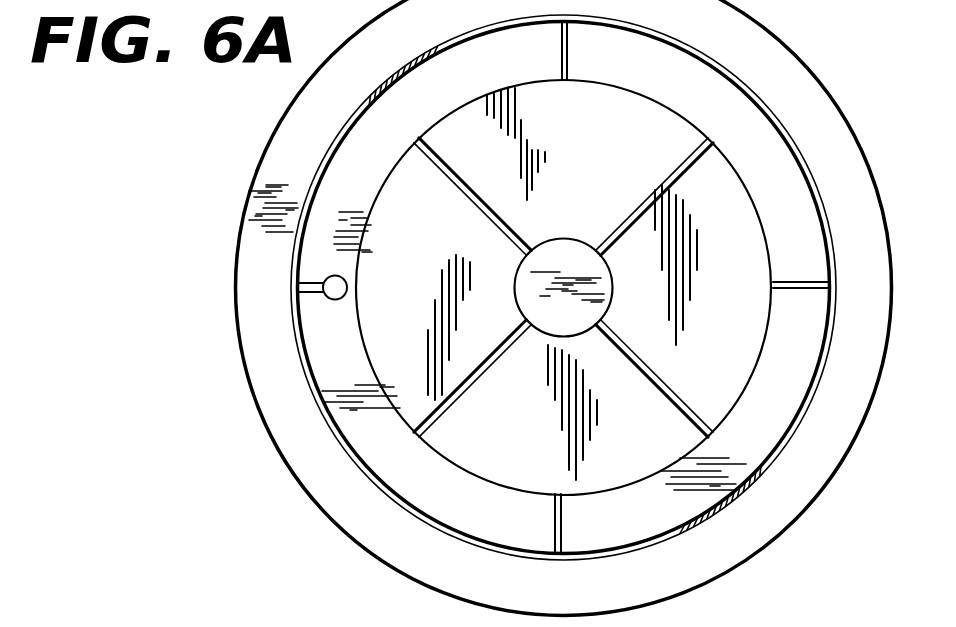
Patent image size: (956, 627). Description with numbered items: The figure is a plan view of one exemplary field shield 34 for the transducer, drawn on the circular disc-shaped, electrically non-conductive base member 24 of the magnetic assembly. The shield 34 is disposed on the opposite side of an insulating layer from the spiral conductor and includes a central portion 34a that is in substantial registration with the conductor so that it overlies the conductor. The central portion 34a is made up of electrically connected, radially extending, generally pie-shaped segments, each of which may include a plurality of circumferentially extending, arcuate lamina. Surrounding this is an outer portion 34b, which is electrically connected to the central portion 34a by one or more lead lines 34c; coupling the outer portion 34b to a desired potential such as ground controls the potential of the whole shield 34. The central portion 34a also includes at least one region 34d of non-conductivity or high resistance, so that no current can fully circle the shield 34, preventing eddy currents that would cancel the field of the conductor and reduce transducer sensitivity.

The base member 24 is at (346, 500).
The shield 34 is at (334, 440).
The central portion 34a is at (488, 110).
The outer portion 34b is at (683, 45).
The lead lines 34c is at (817, 283).
The region of non-conductivity 34d is at (705, 435).